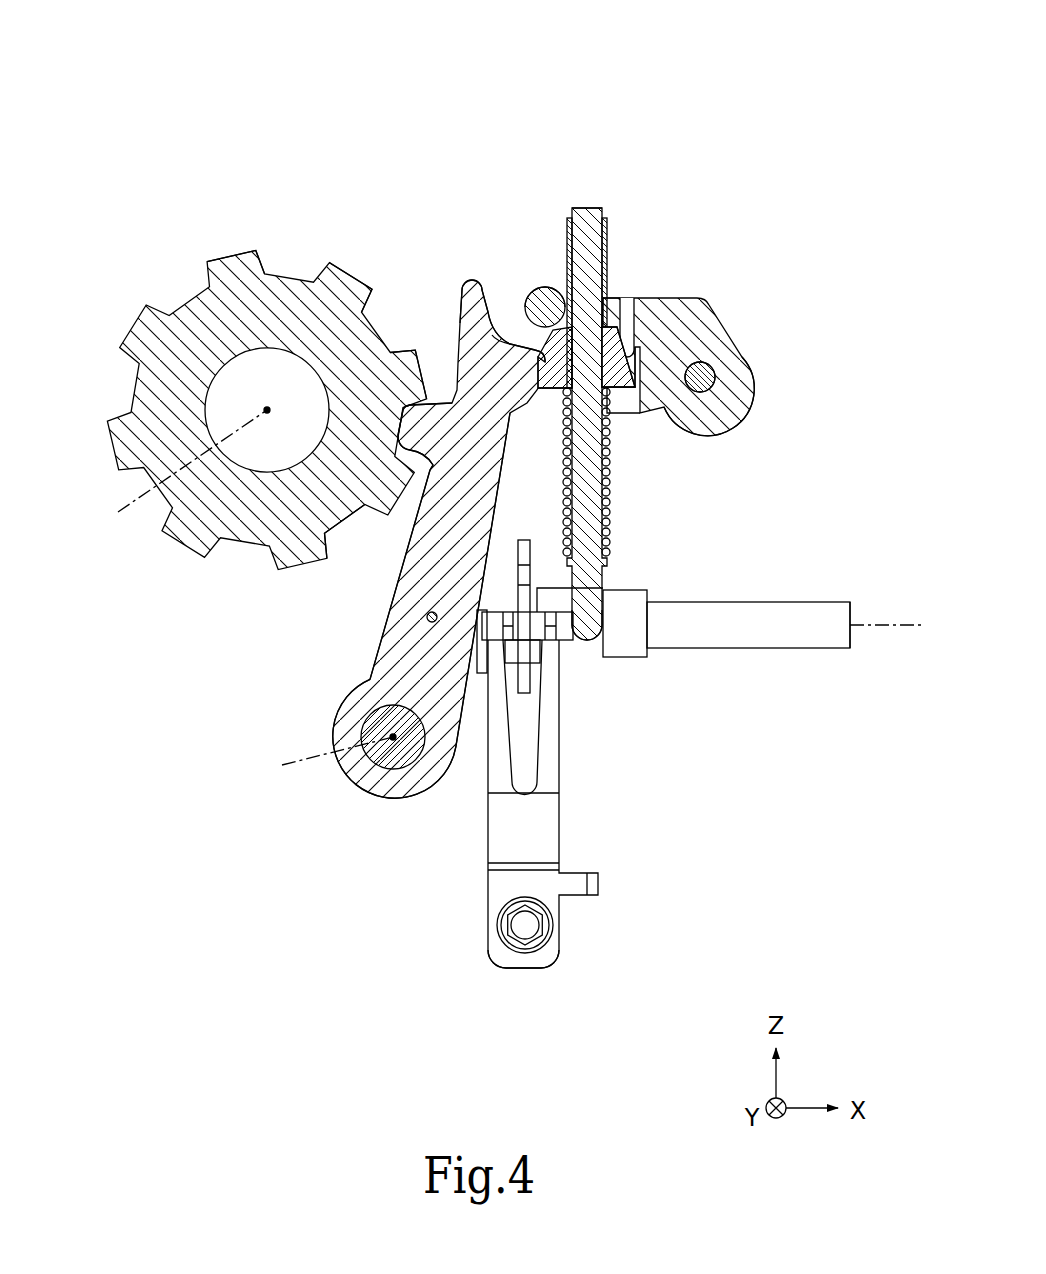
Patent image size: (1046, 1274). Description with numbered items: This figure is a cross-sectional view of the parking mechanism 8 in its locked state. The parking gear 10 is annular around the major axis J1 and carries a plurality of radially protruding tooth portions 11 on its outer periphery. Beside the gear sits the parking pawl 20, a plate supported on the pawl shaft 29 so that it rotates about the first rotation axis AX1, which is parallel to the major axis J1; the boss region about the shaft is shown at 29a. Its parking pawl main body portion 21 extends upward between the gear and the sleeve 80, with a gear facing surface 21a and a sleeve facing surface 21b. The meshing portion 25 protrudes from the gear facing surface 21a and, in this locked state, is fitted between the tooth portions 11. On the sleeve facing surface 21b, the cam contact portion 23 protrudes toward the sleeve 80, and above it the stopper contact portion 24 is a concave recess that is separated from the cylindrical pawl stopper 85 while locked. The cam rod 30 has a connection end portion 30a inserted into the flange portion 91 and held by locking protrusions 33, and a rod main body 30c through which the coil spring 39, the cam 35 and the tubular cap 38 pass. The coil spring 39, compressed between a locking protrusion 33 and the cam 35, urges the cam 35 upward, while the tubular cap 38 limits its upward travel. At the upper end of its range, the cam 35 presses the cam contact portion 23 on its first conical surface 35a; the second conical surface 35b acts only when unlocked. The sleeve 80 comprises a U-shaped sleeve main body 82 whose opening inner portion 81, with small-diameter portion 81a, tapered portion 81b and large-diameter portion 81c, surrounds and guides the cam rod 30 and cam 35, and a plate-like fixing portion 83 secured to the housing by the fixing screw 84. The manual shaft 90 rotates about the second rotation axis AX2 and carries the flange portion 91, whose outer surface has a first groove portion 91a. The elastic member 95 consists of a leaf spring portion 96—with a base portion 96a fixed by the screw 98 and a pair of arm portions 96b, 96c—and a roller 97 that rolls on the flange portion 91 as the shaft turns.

The parking mechanism 8 is at (786, 70).
The parking gear 10 is at (231, 246).
The tooth portion 11 is at (215, 256).
The major axis J1 is at (178, 472).
The parking pawl 20 is at (467, 273).
The parking pawl main body portion 21 is at (405, 640).
The gear facing surface 21a is at (402, 578).
The sleeve facing surface 21b is at (500, 520).
The cam contact portion 23 is at (543, 362).
The stopper contact portion 24 is at (528, 340).
The meshing portion 25 is at (431, 415).
The pawl shaft 29 is at (398, 760).
The pivot boss 29a is at (373, 790).
The first rotation axis AX1 is at (312, 763).
The cam rod 30 is at (584, 204).
The connection end portion 30a is at (562, 632).
The rod main body 30c is at (592, 210).
The locking protrusion 33 is at (610, 562).
The cam 35 is at (644, 378).
The first conical surface 35a is at (556, 400).
The second conical surface 35b is at (545, 288).
The tubular cap 38 is at (606, 225).
The coil spring 39 is at (612, 485).
The sleeve 80 is at (723, 321).
The opening inner portion 81 is at (713, 153).
The small-diameter portion 81a is at (615, 300).
The tapered portion 81b is at (623, 332).
The large-diameter portion 81c is at (632, 372).
The sleeve main body 82 is at (648, 417).
The fixing portion 83 is at (735, 405).
The fixing screw 84 is at (703, 378).
The pawl stopper 85 is at (548, 284).
The manual shaft 90 is at (792, 654).
The second rotation axis AX2 is at (878, 630).
The flange portion 91 is at (536, 545).
The first groove portion 91a is at (533, 668).
The elastic member 95 is at (564, 828).
The leaf spring portion 96 is at (542, 845).
The base portion 96a is at (535, 965).
The arm portion 96b is at (552, 745).
The arm portion 96c is at (492, 752).
The roller 97 is at (535, 650).
The screw 98 is at (527, 928).